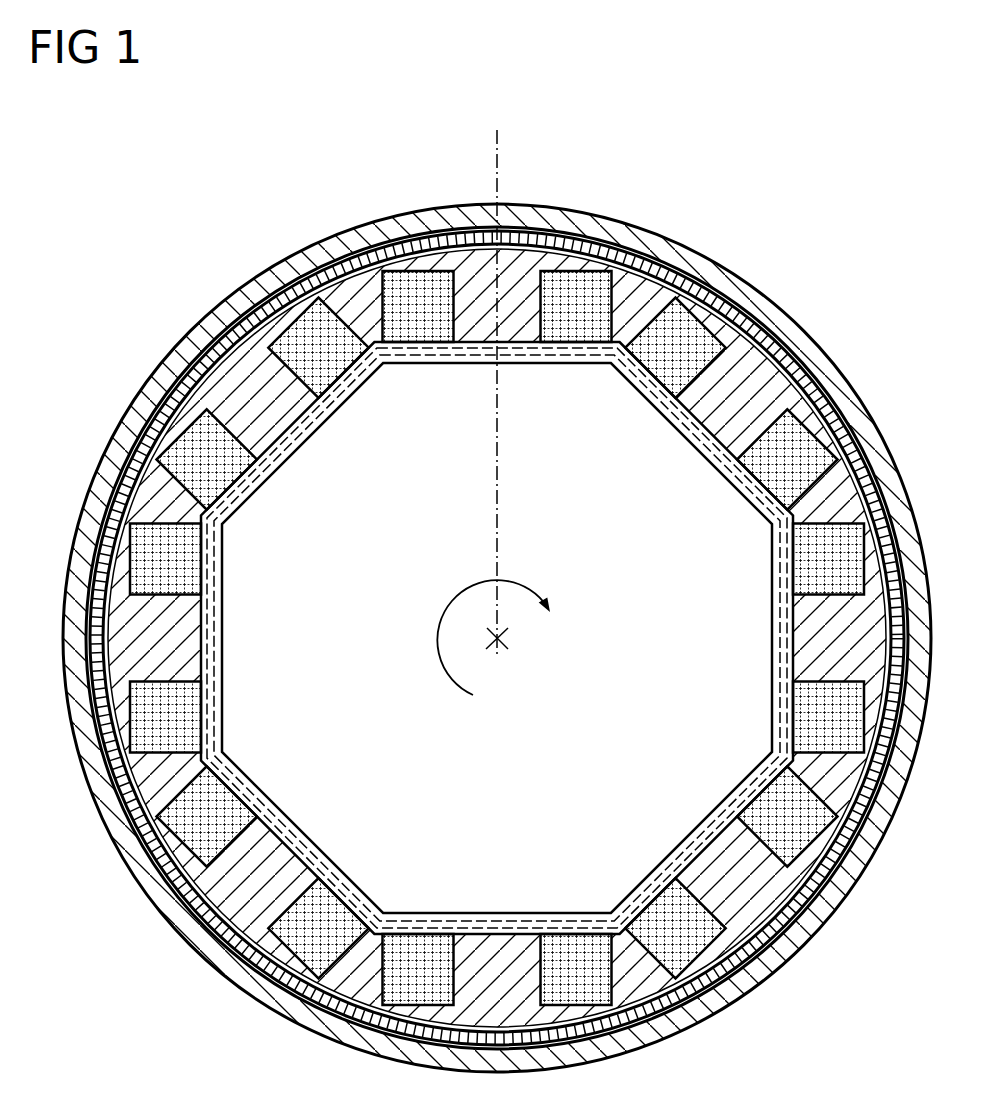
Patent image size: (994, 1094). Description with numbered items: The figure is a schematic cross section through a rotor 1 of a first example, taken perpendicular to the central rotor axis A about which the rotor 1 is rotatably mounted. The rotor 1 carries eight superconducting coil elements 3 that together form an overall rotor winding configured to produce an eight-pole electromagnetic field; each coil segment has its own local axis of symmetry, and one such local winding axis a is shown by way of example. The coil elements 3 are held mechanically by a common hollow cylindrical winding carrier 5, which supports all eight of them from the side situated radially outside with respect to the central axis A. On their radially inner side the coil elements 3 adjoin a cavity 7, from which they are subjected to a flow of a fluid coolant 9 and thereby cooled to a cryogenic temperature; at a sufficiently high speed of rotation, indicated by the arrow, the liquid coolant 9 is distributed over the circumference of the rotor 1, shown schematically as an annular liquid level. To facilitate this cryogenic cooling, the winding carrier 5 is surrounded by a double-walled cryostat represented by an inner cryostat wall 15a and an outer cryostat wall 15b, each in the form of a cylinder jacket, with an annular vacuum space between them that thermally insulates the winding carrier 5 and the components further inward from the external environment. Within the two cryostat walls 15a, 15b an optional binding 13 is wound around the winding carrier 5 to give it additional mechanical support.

The rotor 1 is at (148, 210).
The superconducting coil elements 3 is at (607, 372).
The winding carrier 5 is at (762, 375).
The cavity 7 is at (619, 647).
The fluid coolant 9 is at (300, 432).
The binding 13 is at (857, 830).
The inner cryostat wall 15a is at (832, 912).
The outer cryostat wall 15b is at (848, 877).
The local winding axis a is at (503, 170).
The central rotor axis A is at (505, 643).